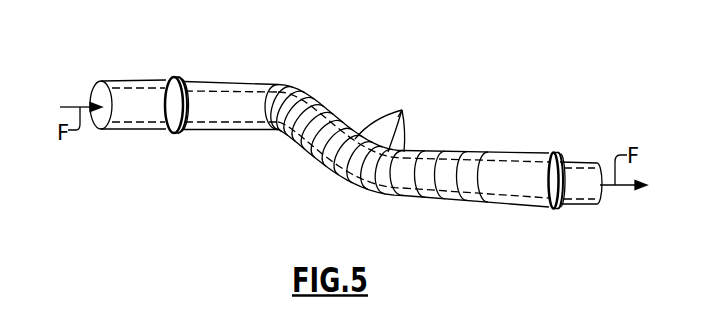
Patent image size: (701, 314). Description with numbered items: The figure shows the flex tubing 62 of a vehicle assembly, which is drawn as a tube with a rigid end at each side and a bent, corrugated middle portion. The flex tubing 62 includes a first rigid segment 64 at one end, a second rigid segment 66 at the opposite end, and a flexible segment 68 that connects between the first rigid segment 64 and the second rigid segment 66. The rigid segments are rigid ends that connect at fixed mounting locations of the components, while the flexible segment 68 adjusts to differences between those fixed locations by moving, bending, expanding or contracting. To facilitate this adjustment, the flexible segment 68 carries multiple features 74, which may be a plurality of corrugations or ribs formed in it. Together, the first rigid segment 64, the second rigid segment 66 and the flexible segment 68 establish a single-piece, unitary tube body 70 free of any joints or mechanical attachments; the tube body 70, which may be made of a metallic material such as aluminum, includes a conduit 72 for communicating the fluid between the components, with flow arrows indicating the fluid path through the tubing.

The flex tubing 62 is at (346, 152).
The first rigid segment 64 is at (142, 142).
The second rigid segment 66 is at (577, 223).
The flexible segment 68 is at (323, 180).
The tube body 70 is at (227, 81).
The conduit 72 is at (215, 112).
The features 74 is at (402, 110).